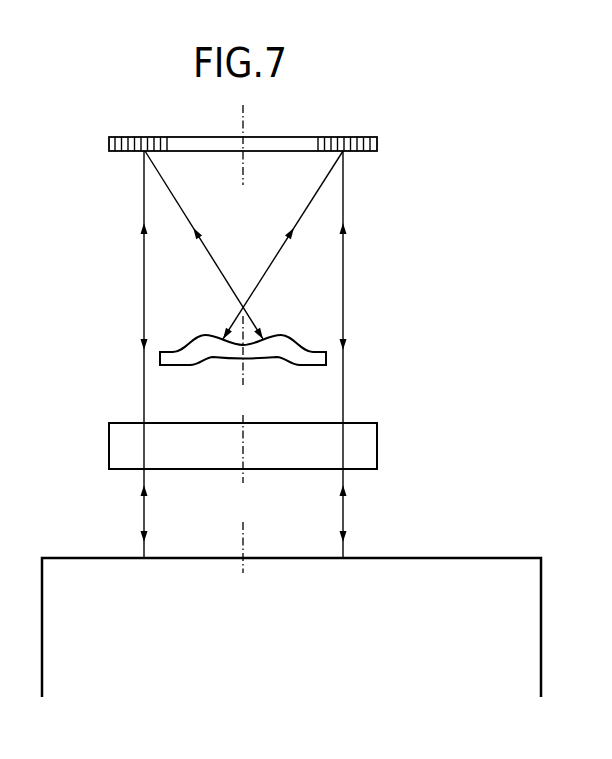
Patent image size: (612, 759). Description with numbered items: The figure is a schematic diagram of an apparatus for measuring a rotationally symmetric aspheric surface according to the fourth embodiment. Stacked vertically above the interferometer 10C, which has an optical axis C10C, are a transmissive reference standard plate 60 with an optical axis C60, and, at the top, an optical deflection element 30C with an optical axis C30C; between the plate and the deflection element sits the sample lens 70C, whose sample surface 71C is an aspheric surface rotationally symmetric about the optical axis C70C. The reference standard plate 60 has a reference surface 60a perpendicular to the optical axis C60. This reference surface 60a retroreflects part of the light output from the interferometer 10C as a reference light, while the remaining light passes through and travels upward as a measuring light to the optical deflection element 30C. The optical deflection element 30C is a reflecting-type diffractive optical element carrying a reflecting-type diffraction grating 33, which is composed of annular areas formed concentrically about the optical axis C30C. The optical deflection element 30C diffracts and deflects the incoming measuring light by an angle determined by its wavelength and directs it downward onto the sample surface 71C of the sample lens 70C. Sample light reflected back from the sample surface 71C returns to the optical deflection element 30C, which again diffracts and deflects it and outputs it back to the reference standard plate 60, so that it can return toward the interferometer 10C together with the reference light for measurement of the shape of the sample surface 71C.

The optical deflection element 30C is at (385, 143).
The reflecting-type diffraction grating 33 is at (362, 152).
The sample lens 70C is at (292, 323).
The sample surface 71C is at (290, 333).
The transmissive reference standard plate 60 is at (383, 447).
The reference surface 60a is at (360, 423).
The interferometer 10C is at (497, 558).
The optical axis of the optical deflection element C30C is at (245, 113).
The optical axis of the sample lens C70C is at (243, 375).
The optical axis of the reference standard plate C60 is at (243, 477).
The optical axis of the interferometer C10C is at (243, 527).